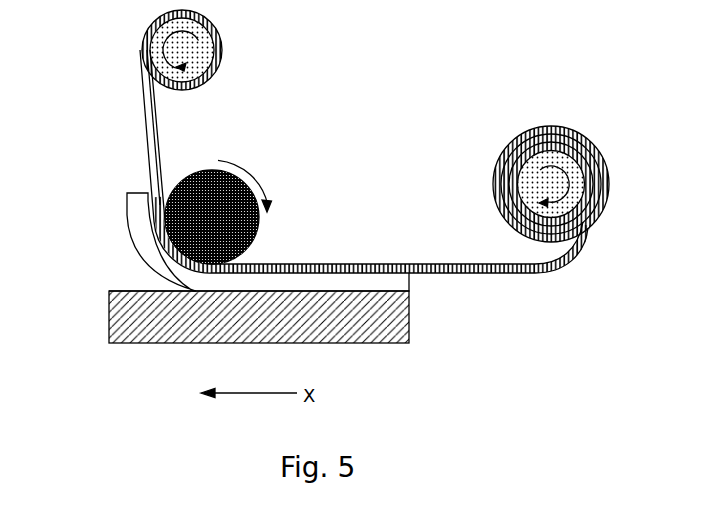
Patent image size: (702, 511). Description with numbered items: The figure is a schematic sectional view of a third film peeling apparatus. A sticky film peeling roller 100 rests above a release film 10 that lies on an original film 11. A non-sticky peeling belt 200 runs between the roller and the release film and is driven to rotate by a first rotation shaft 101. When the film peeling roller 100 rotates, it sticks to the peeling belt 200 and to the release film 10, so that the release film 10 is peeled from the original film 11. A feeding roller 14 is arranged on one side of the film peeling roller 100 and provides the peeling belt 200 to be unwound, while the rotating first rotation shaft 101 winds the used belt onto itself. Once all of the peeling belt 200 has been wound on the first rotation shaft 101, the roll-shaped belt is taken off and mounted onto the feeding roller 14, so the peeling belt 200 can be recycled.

The peeling belt 200 is at (155, 137).
The first rotation shaft 101 is at (212, 50).
The film peeling roller 100 is at (243, 229).
The feeding roller 14 is at (541, 182).
The release film 10 is at (398, 282).
The original film 11 is at (398, 332).